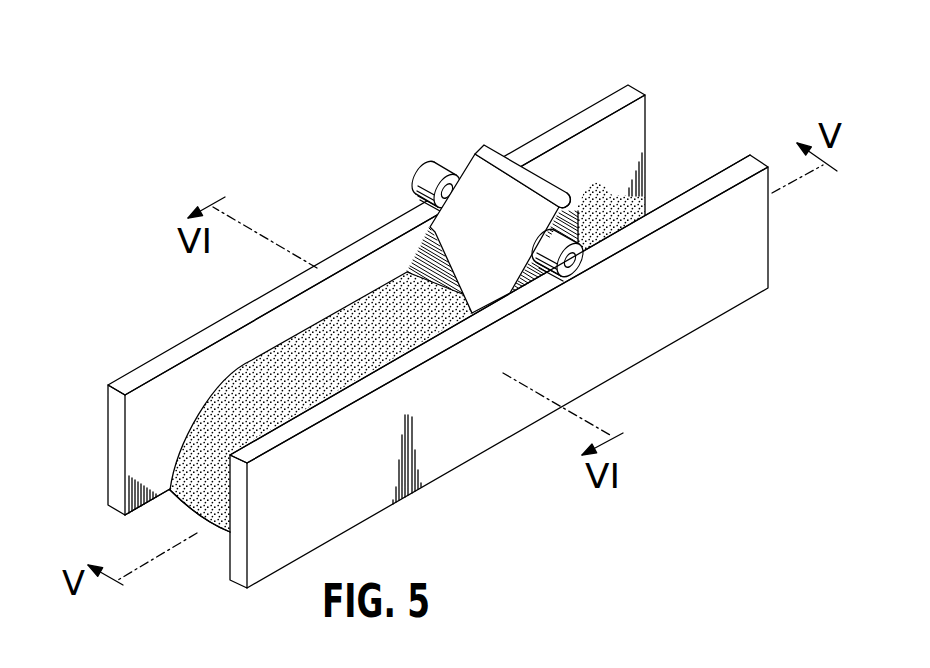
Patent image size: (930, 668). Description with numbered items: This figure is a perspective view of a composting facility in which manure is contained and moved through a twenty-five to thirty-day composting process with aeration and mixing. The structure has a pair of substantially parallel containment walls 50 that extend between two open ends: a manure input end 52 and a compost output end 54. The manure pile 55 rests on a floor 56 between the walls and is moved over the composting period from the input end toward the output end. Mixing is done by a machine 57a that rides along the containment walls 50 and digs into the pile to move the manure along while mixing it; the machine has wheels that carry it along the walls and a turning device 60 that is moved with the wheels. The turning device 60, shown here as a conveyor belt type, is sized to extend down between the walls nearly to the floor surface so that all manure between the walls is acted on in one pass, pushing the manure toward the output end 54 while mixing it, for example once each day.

The containment walls 50 is at (562, 135).
The manure input end 52 is at (210, 543).
The compost output end 54 is at (705, 163).
The manure pile 55 is at (270, 359).
The floor 56 is at (158, 515).
The machine 57a is at (483, 182).
The turning device 60 is at (560, 207).